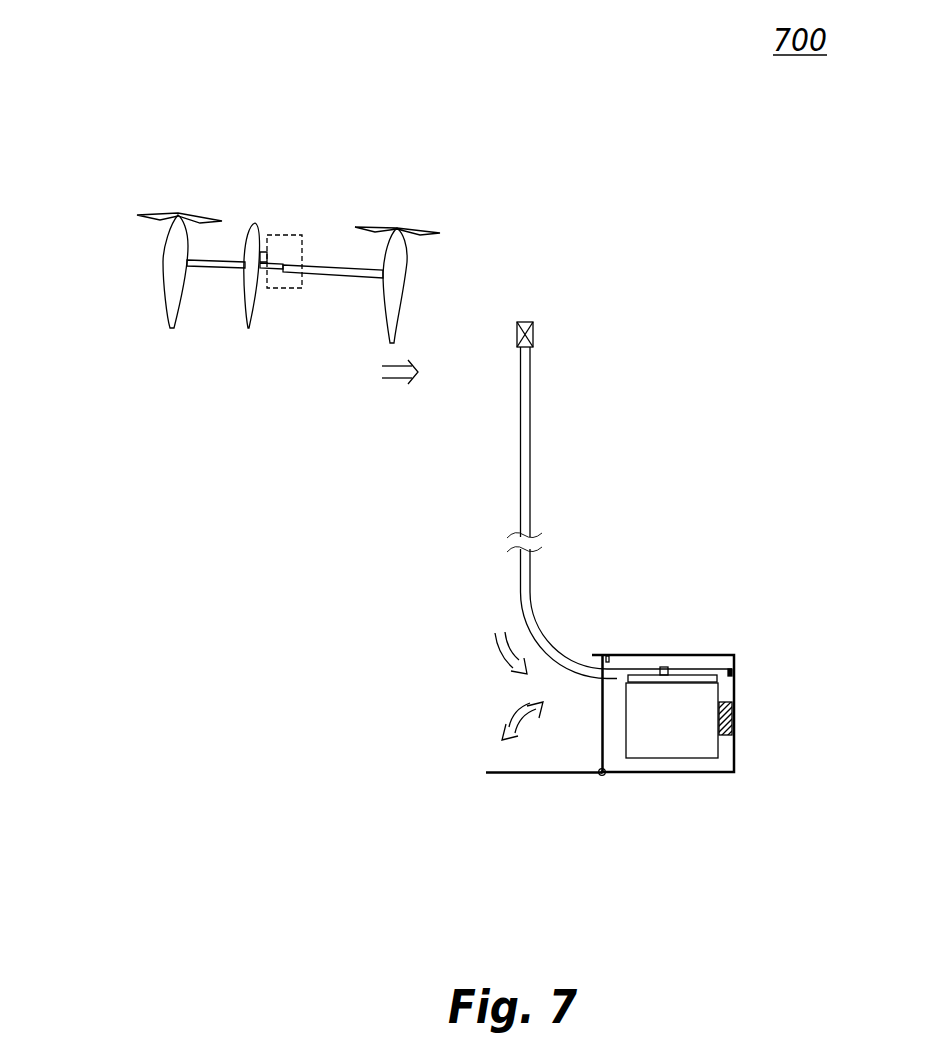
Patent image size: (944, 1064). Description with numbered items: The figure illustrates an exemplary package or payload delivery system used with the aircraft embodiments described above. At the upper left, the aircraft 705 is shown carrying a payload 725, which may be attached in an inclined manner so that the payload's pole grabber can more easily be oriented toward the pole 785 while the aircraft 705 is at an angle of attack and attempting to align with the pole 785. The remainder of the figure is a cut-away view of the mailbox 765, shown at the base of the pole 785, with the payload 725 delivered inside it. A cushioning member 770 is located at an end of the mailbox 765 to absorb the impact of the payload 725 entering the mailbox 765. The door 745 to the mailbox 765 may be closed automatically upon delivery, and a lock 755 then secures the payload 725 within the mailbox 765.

The aircraft 705 is at (163, 261).
The payload 725 is at (295, 288).
The pole 785 is at (531, 448).
The lock 755 is at (607, 656).
The mailbox 765 is at (739, 626).
The cushioning member 770 is at (733, 732).
The door 745 is at (548, 773).